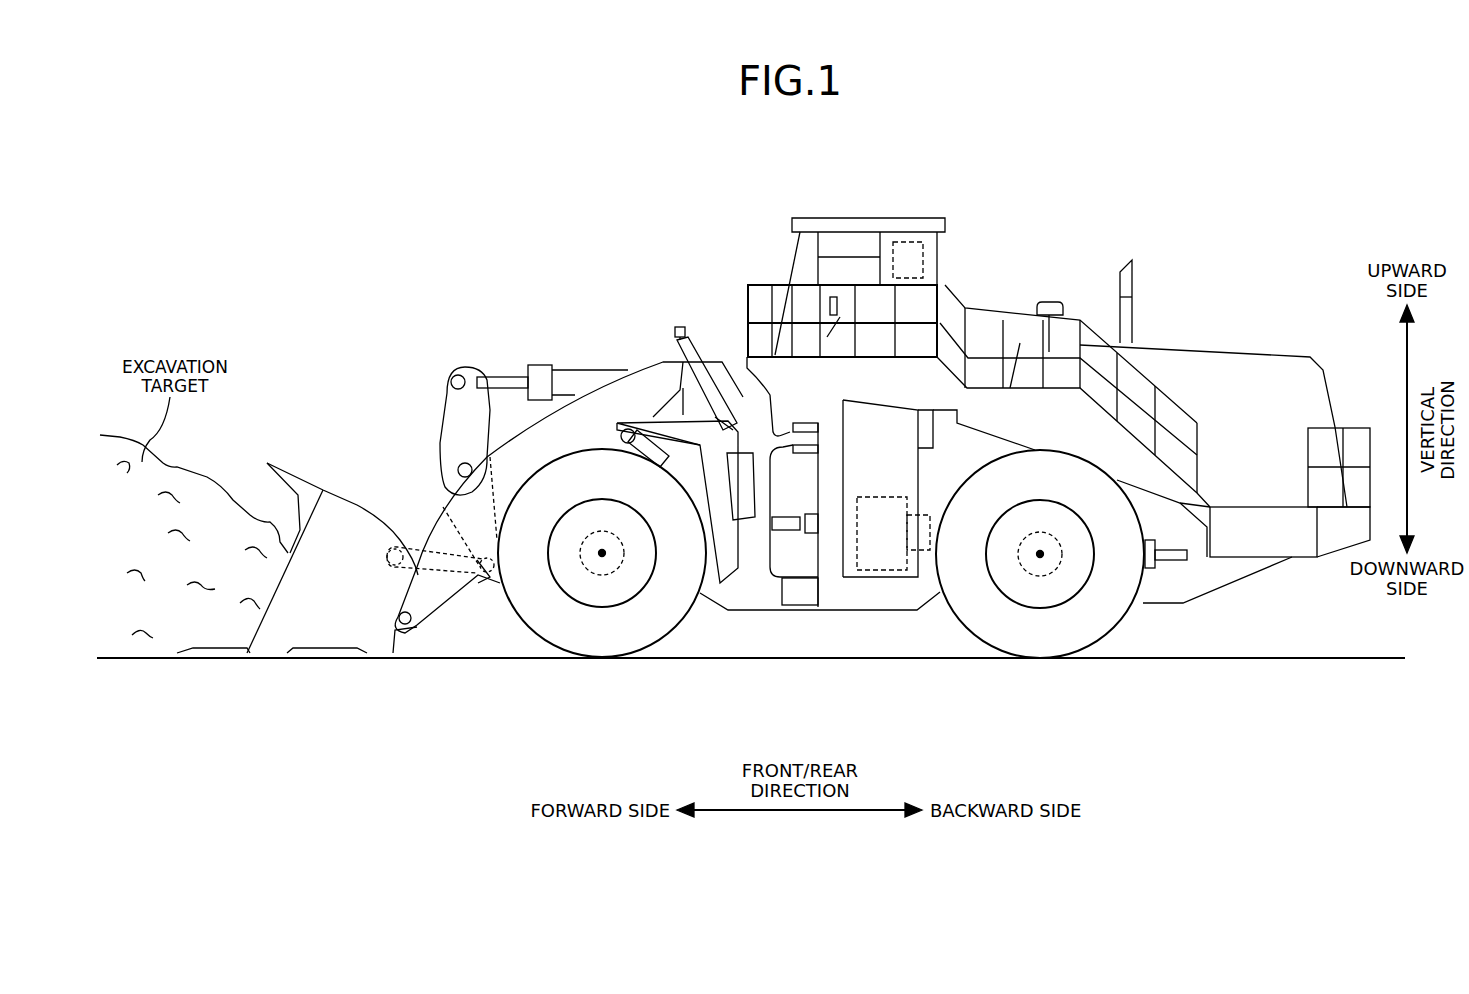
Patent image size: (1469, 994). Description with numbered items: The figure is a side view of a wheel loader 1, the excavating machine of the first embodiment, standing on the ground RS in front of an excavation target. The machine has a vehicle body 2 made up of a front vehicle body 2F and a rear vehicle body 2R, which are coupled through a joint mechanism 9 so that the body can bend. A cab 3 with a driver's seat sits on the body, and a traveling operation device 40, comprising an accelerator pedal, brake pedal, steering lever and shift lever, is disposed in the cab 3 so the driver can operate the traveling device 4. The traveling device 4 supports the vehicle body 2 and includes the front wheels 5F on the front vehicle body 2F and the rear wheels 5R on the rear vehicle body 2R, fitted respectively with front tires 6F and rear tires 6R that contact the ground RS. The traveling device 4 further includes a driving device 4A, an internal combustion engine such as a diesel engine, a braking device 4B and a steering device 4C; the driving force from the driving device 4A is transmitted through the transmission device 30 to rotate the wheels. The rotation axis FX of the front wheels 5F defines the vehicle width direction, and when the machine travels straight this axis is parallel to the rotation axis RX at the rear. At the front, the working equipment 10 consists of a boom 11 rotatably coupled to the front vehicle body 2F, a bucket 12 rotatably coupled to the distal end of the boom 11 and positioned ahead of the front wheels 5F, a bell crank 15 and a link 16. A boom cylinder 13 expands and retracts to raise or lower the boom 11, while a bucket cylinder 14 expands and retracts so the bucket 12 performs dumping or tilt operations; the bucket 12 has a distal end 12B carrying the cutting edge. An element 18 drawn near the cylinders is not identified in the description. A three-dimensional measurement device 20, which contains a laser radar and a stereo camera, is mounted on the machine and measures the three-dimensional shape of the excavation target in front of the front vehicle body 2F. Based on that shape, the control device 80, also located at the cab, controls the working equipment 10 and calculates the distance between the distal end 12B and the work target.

The wheel loader 1 is at (1115, 175).
The vehicle body 2 is at (862, 710).
The front vehicle body 2F is at (762, 605).
The rear vehicle body 2R is at (867, 593).
The cab 3 is at (860, 276).
The traveling device 4 is at (1156, 627).
The driving device 4A is at (897, 577).
The braking device 4B is at (598, 577).
The steering device 4C is at (795, 537).
The front wheels 5F is at (628, 582).
The rear wheels 5R is at (1063, 582).
The front tires 6F is at (530, 635).
The rear tires 6R is at (975, 643).
The joint mechanism 9 is at (795, 423).
The working equipment 10 is at (404, 408).
The boom 11 is at (447, 532).
The bucket 12 is at (357, 523).
The distal end 12B is at (177, 657).
The boom cylinder 13 is at (725, 565).
The bucket cylinder 14 is at (583, 382).
The bell crank 15 is at (457, 433).
The link 16 is at (418, 545).
The bucket cylinder 18 is at (712, 398).
The three-dimensional measurement device 20 is at (670, 337).
The transmission device 30 is at (930, 552).
The traveling operation device 40 is at (835, 296).
The control device 80 is at (925, 258).
The rotation axis FX is at (602, 553).
The rotation axis RX is at (1040, 554).
The ground RS is at (1277, 658).